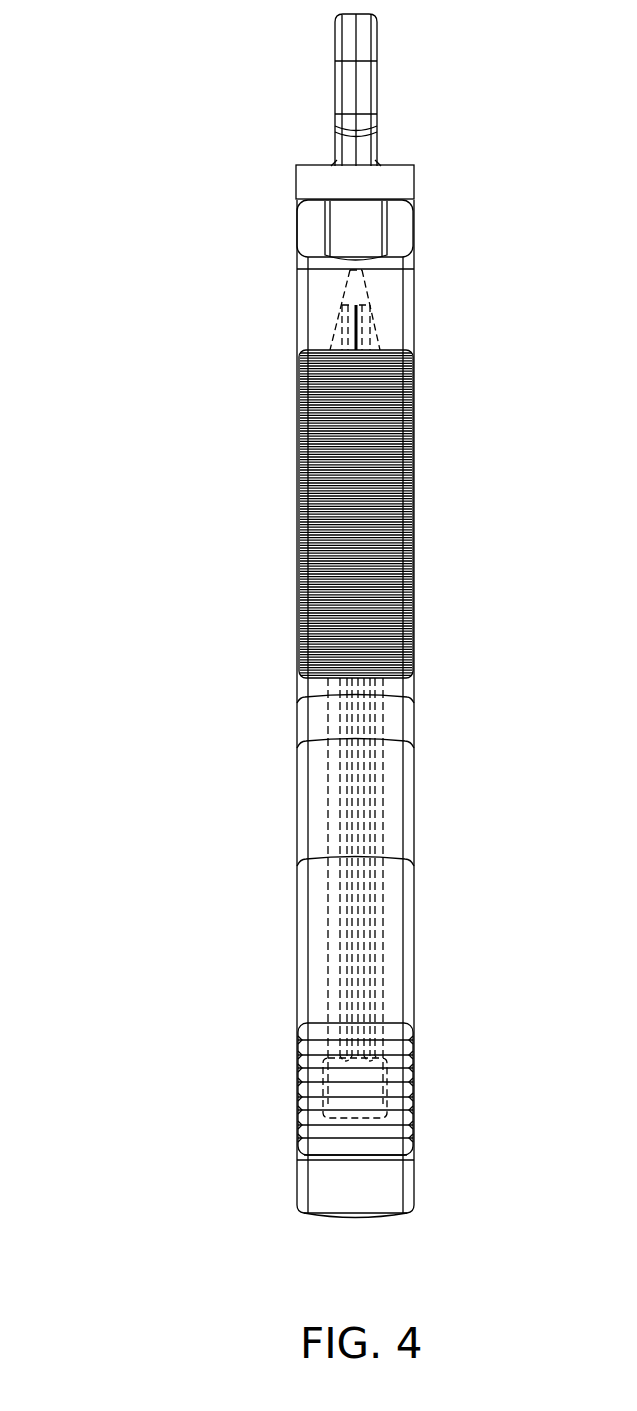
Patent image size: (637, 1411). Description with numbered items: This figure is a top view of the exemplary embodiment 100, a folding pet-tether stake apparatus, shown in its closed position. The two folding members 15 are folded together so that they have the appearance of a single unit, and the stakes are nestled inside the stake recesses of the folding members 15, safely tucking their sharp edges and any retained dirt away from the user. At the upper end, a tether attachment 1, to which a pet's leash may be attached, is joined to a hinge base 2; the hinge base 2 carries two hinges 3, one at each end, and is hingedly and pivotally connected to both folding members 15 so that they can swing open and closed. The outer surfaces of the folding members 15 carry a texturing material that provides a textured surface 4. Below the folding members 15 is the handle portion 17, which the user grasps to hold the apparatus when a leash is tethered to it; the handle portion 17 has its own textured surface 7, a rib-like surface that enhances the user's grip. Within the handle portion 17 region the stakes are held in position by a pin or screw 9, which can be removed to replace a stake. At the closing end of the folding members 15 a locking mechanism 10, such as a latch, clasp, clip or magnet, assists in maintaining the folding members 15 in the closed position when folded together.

The exemplary embodiment 100 is at (137, 151).
The tether attachment 1 is at (378, 84).
The hinge base 2 is at (370, 232).
The hinges 3 is at (297, 228).
The textured surface 4 is at (318, 318).
The folding members 15 is at (395, 318).
The handle portion 17 is at (318, 808).
The textured surface 7 is at (314, 1090).
The pin or screw 9 is at (422, 1082).
The locking mechanism 10 is at (354, 1225).